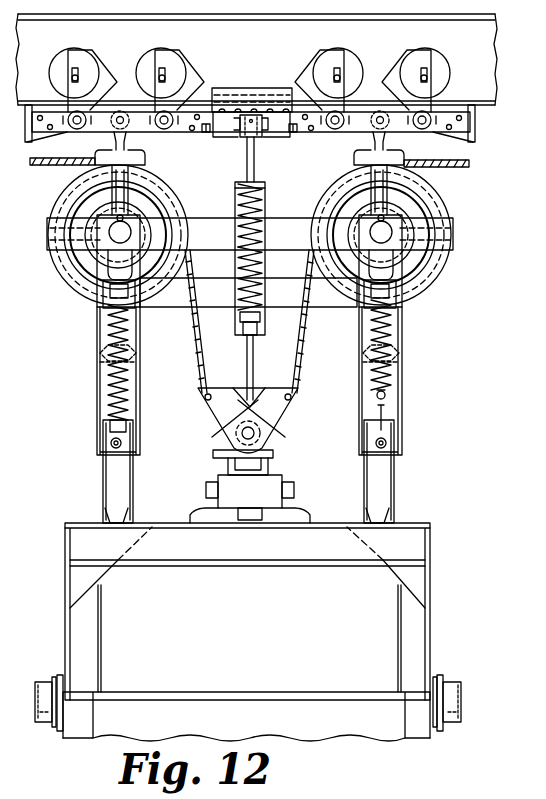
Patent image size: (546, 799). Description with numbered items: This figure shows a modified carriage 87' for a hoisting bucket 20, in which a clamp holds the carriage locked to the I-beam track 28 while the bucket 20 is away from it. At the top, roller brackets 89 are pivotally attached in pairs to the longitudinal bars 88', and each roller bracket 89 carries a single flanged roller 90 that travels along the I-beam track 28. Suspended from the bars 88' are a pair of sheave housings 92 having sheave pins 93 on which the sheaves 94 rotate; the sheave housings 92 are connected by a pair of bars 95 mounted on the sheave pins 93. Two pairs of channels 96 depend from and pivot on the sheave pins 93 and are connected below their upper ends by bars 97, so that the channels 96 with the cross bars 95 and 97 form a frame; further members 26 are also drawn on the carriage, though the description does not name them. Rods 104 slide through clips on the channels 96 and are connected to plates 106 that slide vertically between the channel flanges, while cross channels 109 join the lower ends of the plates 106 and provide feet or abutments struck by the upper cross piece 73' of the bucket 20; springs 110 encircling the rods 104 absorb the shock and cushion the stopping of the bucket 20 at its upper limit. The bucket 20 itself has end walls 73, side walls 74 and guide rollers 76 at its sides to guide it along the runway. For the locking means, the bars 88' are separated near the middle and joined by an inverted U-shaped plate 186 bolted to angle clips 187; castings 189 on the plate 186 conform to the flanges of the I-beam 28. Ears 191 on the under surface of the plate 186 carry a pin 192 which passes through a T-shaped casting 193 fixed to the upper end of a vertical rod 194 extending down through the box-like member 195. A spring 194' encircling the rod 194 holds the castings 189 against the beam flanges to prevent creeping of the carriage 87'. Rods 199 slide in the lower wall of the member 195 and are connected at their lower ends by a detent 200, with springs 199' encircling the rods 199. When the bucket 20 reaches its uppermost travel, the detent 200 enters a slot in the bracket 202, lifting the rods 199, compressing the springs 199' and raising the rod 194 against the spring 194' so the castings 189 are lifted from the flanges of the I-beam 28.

The bucket 20 is at (438, 618).
The frame members 26 is at (62, 159).
The I-beam track 28 is at (485, 56).
The end walls 73 is at (223, 611).
The upper cross piece 73' is at (247, 584).
The side walls 74 is at (292, 700).
The guide rollers 76 is at (46, 687).
The modified carriage 87' is at (281, 327).
The longitudinal bars 88' is at (250, 140).
The roller brackets 89 is at (325, 73).
The flanged roller 90 is at (353, 73).
The sheave housings 92 is at (103, 153).
The sheave pins 93 is at (116, 230).
The sheaves 94 is at (445, 215).
The bars 95 is at (202, 228).
The channels 96 is at (97, 330).
The bars 97 is at (216, 305).
The rods 104 is at (385, 393).
The plates 106 is at (112, 470).
The cross channels 109 is at (118, 520).
The springs 110 is at (108, 380).
The inverted U-shaped plate 186 is at (268, 131).
The angle clips 187 is at (210, 133).
The castings 189 is at (240, 90).
The ears 191 is at (241, 130).
The pin 192 is at (267, 148).
The T-shaped casting 193 is at (253, 170).
The vertical rod 194 is at (278, 182).
The spring 194' is at (225, 258).
The box-like member 195 is at (240, 263).
The rods 199 is at (272, 366).
The springs 199' is at (273, 294).
The detent 200 is at (278, 408).
The bracket 202 is at (228, 416).